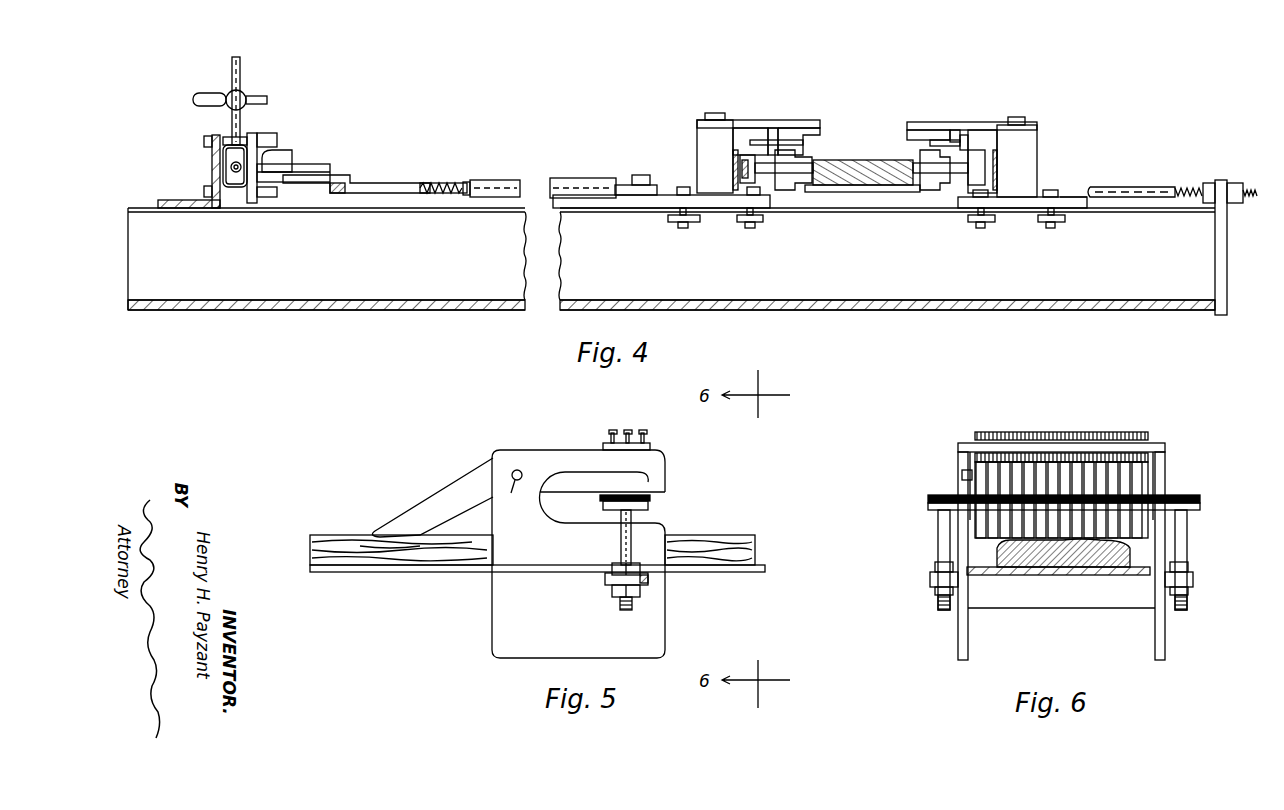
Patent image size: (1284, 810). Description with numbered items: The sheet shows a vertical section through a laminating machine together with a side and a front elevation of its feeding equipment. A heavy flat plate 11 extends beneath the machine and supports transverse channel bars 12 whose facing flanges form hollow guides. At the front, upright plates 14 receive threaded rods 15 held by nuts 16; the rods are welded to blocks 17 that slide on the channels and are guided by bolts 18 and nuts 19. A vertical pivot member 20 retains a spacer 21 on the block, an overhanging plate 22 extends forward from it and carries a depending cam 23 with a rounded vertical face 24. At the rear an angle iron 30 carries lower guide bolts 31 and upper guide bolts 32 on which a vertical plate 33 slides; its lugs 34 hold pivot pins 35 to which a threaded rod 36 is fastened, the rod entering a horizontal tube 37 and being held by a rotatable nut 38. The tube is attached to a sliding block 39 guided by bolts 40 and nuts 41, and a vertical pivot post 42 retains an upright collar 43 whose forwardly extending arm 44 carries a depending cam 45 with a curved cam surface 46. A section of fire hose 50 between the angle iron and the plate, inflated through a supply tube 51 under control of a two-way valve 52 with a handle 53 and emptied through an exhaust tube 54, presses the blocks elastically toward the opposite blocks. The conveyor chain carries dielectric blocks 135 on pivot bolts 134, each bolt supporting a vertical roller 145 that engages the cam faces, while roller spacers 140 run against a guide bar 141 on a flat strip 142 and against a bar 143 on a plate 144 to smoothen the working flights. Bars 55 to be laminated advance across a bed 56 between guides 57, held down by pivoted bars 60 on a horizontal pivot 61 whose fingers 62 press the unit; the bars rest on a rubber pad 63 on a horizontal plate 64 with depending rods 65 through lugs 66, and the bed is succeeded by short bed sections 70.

In FIG. 4, the heavy flat plate 11 is at (845, 306).
In FIG. 4, the channel bars 12 is at (578, 282).
In FIG. 4, the upright plates 14 is at (1228, 232).
In FIG. 4, the threaded rods 15 is at (1146, 186).
In FIG. 4, the nuts 16 is at (1236, 182).
In FIG. 4, the blocks 17 is at (1067, 198).
In FIG. 4, the bolts 18 is at (978, 229).
In FIG. 4, the nuts 19 is at (1032, 220).
In FIG. 4, the vertical pivot member 20 is at (1022, 117).
In FIG. 4, the spacer 21 is at (1037, 151).
In FIG. 4, the overhanging plate 22 is at (944, 122).
In FIG. 4, the depending cam 23 is at (912, 136).
In FIG. 4, the rounded vertical face 24 is at (958, 130).
In FIG. 4, the angle iron 30 is at (165, 199).
In FIG. 4, the lower guide bolts 31 is at (210, 199).
In FIG. 4, the upper guide bolts 32 is at (204, 142).
In FIG. 4, the vertical plate 33 is at (260, 150).
In FIG. 4, the lugs 34 is at (302, 172).
In FIG. 4, the pivot pins 35 is at (285, 158).
In FIG. 4, the threaded rod 36 is at (395, 181).
In FIG. 4, the horizontal tube 37 is at (516, 180).
In FIG. 4, the rotatable nut 38 is at (470, 182).
In FIG. 4, the sliding block 39 is at (645, 210).
In FIG. 4, the bolts 40 is at (683, 229).
In FIG. 4, the nuts 41 is at (730, 222).
In FIG. 4, the vertical pivot post 42 is at (715, 112).
In FIG. 4, the upright collar 43 is at (697, 146).
In FIG. 4, the forwardly extending arm 44 is at (750, 118).
In FIG. 4, the depending cam 45 is at (800, 130).
In FIG. 4, the curved cam surface 46 is at (782, 128).
In FIG. 4, the fire hose 50 is at (250, 145).
In FIG. 4, the supply tube 51 is at (237, 58).
In FIG. 4, the two-way valve 52 is at (228, 106).
In FIG. 4, the handle 53 is at (194, 99).
In FIG. 4, the exhaust tube 54 is at (262, 96).
In FIG. 4, the bars 55 is at (885, 158).
In FIG. 5, the bars 55 is at (746, 537).
In FIG. 5, the bed 56 is at (757, 574).
In FIG. 6, the bed 56 is at (1058, 576).
In FIG. 6, the guides 57 is at (1000, 560).
In FIG. 5, the pivoted bars 60 is at (663, 468).
In FIG. 6, the pivoted bars 60 is at (1146, 466).
In FIG. 5, the horizontal pivot 61 is at (510, 491).
In FIG. 6, the horizontal pivot 61 is at (962, 482).
In FIG. 5, the fingers 62 is at (382, 530).
In FIG. 5, the rubber pad 63 is at (652, 497).
In FIG. 6, the rubber pad 63 is at (928, 499).
In FIG. 5, the horizontal plate 64 is at (650, 506).
In FIG. 6, the horizontal plate 64 is at (928, 510).
In FIG. 5, the depending rods 65 is at (622, 608).
In FIG. 6, the depending rods 65 is at (938, 545).
In FIG. 5, the lugs 66 is at (605, 580).
In FIG. 6, the lugs 66 is at (930, 580).
In FIG. 4, the bed sections 70 is at (875, 192).
In FIG. 4, the pivot bolt 134 is at (968, 140).
In FIG. 4, the block of dielectric material 135 is at (792, 190).
In FIG. 4, the roller spacers 140 is at (748, 158).
In FIG. 4, the guide bar 141 is at (994, 175).
In FIG. 4, the flat strip 142 is at (992, 160).
In FIG. 4, the bar 143 is at (742, 172).
In FIG. 4, the plate 144 is at (735, 166).
In FIG. 4, the vertical roller 145 is at (790, 143).